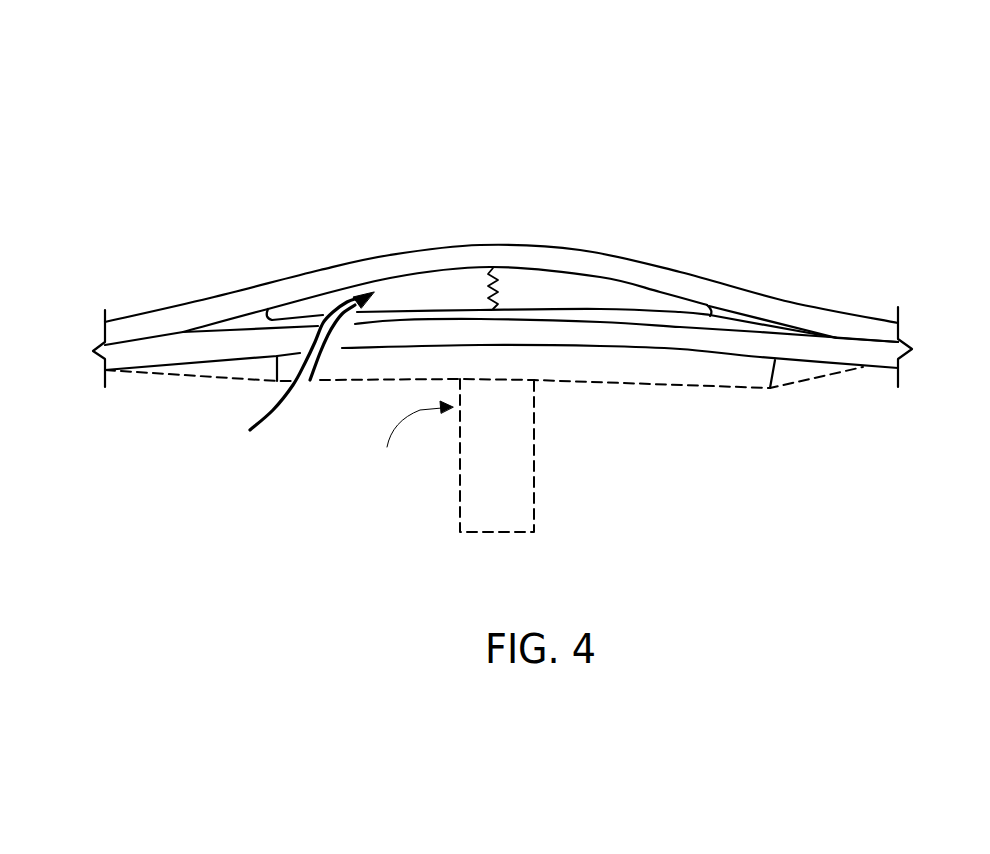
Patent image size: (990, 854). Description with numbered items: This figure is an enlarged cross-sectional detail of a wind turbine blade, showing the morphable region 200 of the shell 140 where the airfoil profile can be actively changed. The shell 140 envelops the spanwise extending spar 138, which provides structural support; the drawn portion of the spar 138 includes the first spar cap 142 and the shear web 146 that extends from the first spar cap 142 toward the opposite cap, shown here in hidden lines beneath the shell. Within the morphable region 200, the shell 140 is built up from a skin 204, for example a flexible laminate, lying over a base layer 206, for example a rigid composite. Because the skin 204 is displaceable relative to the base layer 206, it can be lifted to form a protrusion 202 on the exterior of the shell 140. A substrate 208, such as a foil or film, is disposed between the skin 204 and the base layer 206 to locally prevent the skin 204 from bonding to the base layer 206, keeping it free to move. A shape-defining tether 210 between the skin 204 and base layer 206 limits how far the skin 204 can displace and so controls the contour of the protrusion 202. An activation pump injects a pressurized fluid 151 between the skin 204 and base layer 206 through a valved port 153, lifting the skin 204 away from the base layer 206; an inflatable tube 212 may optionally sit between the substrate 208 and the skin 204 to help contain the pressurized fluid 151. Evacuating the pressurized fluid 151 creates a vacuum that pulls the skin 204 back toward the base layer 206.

The morphable region 200 is at (341, 131).
The protrusion 202 is at (519, 247).
The skin 204 is at (163, 320).
The base layer 206 is at (130, 353).
The substrate 208 is at (592, 310).
The shape-defining tether 210 is at (486, 290).
The inflatable tube 212 is at (712, 309).
The shell 140 is at (853, 292).
The first spar cap 142 is at (603, 363).
The shear web 146 is at (505, 493).
The spar 138 is at (409, 437).
The pressurized fluid 151 is at (263, 412).
The valved port 153 is at (347, 338).